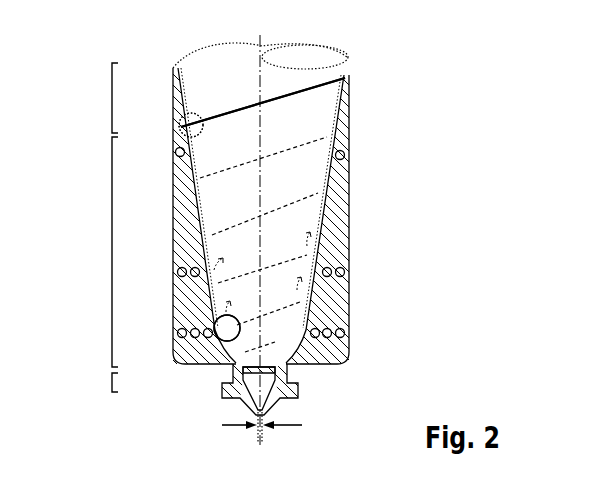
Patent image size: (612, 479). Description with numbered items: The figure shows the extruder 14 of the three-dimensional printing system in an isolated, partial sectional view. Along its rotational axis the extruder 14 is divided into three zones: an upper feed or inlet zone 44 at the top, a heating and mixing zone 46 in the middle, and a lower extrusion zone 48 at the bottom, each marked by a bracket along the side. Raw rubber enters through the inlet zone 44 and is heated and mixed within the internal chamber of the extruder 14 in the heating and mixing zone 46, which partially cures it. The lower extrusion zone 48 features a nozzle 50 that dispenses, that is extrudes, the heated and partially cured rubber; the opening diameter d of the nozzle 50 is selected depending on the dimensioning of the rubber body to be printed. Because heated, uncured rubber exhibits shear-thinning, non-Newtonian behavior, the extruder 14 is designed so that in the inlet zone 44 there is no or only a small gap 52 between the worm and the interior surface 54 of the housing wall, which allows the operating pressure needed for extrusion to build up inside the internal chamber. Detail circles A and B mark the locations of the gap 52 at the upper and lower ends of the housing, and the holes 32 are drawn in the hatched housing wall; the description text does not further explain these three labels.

The extruder 14 is at (482, 131).
The holes / passages 32 is at (338, 338).
The upper feed or inlet zone 44 is at (112, 98).
The heating and mixing zone 46 is at (112, 252).
The lower extrusion zone 48 is at (112, 383).
The nozzle 50 is at (290, 408).
The gap 52 is at (183, 119).
The interior surface 54 is at (340, 120).
The detail A is at (200, 112).
The detail B is at (222, 340).
The opening diameter d is at (300, 427).